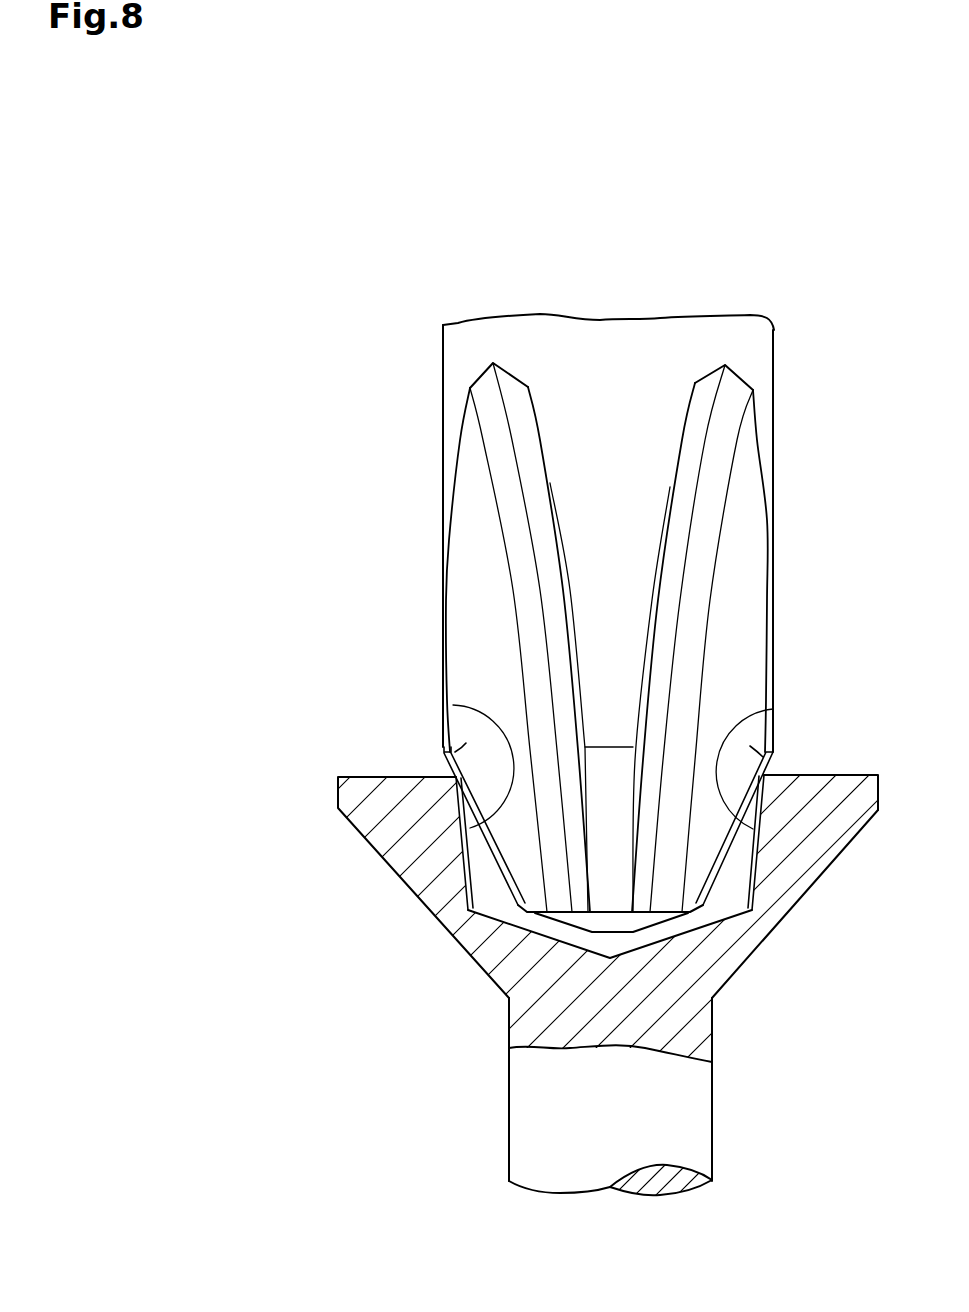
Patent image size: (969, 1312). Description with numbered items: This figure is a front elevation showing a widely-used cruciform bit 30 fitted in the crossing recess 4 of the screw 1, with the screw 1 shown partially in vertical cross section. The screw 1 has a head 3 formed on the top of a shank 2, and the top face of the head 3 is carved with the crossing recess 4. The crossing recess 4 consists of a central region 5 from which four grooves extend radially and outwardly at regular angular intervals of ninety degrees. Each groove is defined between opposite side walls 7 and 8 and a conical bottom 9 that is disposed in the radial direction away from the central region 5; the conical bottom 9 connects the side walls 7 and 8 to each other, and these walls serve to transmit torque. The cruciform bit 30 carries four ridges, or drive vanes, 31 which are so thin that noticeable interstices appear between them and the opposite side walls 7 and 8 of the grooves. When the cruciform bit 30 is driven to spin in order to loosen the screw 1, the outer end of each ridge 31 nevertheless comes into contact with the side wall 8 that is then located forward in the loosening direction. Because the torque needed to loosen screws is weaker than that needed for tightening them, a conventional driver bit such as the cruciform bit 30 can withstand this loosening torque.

The screw 1 is at (346, 754).
The shank 2 is at (695, 1110).
The head 3 is at (833, 830).
The crossing recess 4 is at (795, 912).
The central region 5 is at (628, 958).
The side wall 7 is at (483, 865).
The side wall 8 is at (730, 870).
The conical bottom 9 is at (453, 705).
The cruciform bit 30 is at (773, 508).
The ridge 31 is at (447, 753).